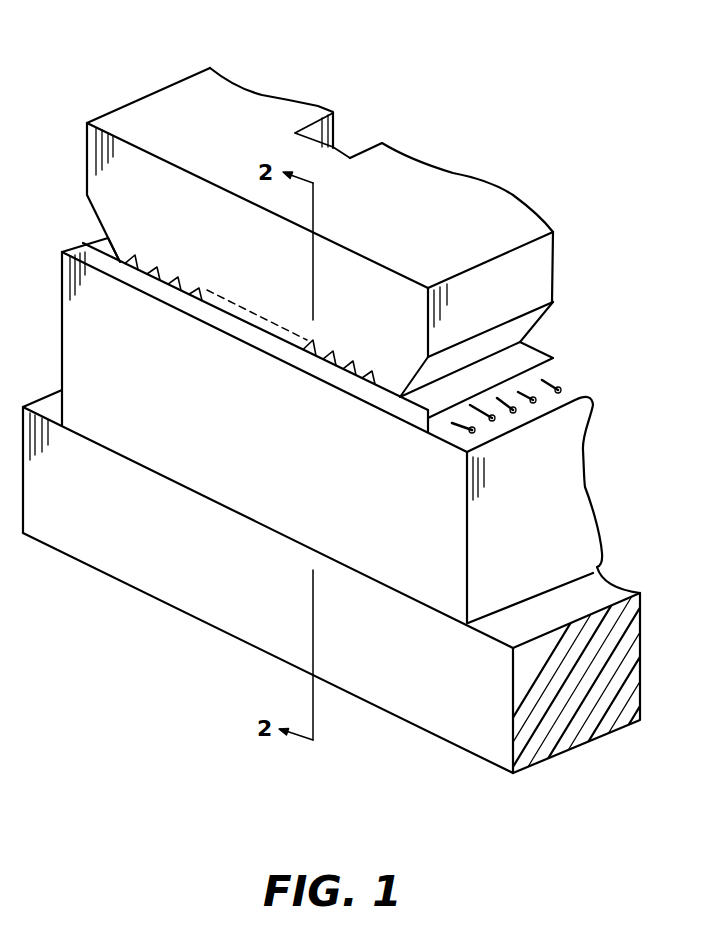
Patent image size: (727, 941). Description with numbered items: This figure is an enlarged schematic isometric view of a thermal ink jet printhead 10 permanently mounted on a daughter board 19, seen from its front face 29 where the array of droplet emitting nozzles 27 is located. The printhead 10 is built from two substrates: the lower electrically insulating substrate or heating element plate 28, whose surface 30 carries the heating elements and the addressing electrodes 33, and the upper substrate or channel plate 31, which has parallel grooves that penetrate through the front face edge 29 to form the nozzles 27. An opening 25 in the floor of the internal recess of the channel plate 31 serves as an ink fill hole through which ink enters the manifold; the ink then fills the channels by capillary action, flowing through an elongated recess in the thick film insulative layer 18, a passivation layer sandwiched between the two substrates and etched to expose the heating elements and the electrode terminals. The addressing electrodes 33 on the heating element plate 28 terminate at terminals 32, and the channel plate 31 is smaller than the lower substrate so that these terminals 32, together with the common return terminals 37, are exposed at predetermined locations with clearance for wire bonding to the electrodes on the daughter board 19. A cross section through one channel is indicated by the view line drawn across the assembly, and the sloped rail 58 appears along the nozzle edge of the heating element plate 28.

The printhead 10 is at (137, 62).
The thick film insulative layer 18 is at (480, 372).
The daughter board 19 is at (130, 560).
The ink fill hole 25 is at (365, 146).
The droplet emitting nozzles 27 is at (137, 268).
The heating element plate 28 is at (577, 530).
The front face 29 is at (86, 146).
The surface 30 is at (577, 382).
The channel plate 31 is at (453, 177).
The electrode terminals 32 is at (514, 417).
The addressing electrodes 33 is at (556, 385).
The common return terminals 37 is at (80, 241).
The rail 58 is at (390, 410).